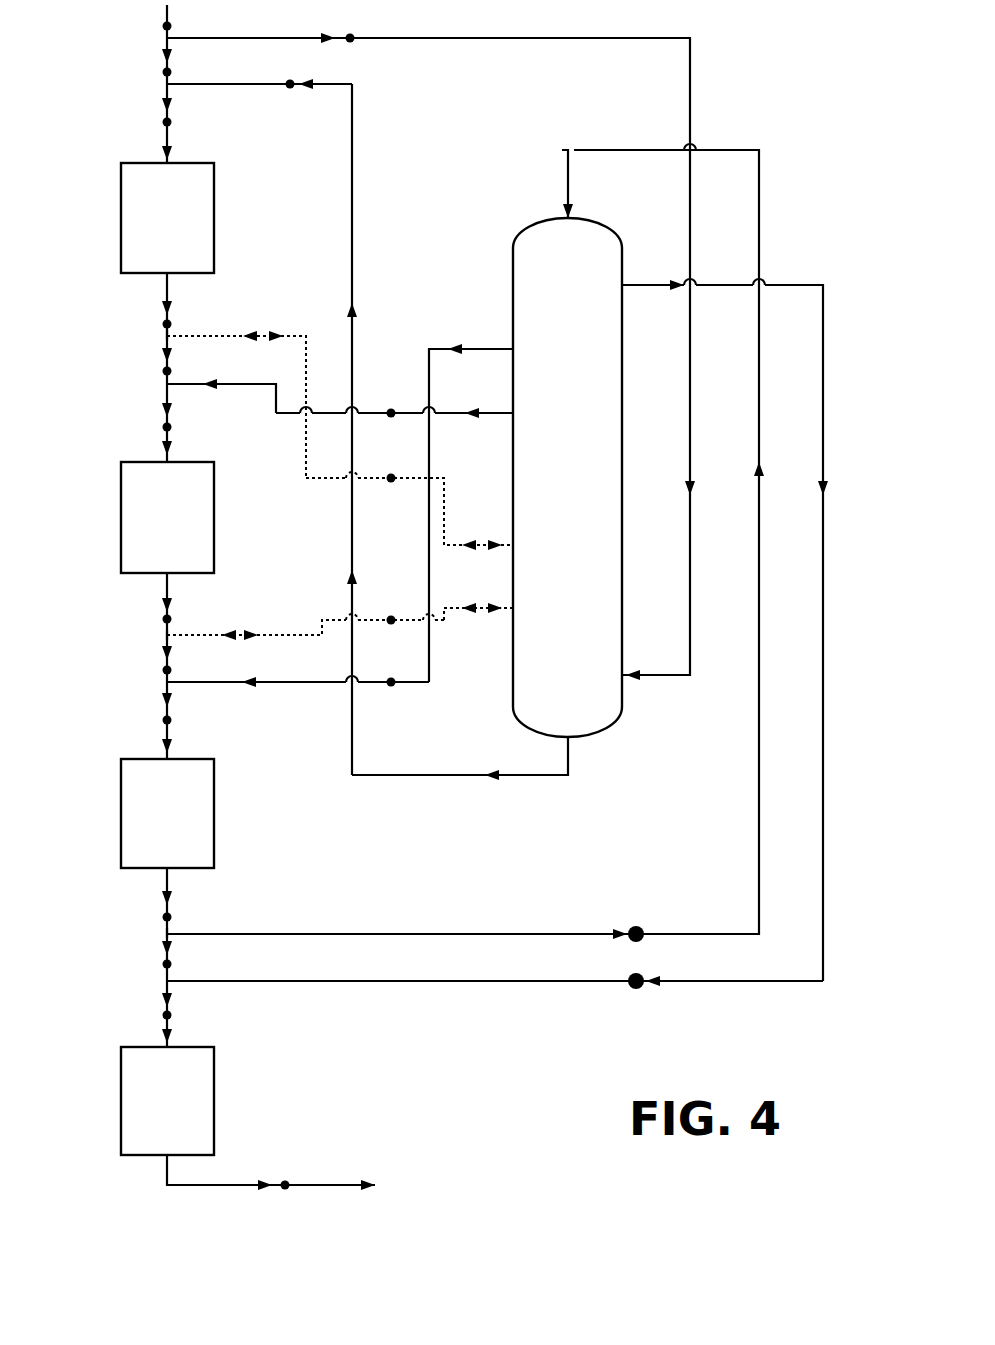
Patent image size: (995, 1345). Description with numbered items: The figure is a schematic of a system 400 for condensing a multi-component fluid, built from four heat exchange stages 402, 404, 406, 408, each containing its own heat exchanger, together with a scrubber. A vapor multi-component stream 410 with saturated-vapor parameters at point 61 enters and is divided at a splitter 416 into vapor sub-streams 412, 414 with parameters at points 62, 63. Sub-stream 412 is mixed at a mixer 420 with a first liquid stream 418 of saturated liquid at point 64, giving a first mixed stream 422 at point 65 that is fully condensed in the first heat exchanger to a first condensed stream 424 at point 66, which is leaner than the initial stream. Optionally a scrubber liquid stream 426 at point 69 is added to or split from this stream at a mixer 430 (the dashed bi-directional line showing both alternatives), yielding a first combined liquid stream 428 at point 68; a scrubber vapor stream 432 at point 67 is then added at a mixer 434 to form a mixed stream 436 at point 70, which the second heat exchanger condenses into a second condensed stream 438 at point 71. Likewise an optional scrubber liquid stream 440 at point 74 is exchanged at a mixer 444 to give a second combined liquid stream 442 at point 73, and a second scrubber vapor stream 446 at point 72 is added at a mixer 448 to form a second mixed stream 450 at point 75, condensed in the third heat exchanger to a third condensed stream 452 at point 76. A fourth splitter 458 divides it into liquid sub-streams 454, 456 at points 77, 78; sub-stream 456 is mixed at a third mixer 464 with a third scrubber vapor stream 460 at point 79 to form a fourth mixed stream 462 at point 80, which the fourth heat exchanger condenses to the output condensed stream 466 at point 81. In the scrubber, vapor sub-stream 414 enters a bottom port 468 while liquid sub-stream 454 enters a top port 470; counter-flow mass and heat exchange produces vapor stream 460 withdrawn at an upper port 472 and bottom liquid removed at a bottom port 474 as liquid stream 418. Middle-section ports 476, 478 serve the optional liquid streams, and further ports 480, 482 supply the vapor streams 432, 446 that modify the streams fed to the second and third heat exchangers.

The system 400 is at (800, 100).
The first heat exchange stage 402 is at (238, 220).
The second heat exchange stage 404 is at (228, 518).
The third heat exchange stage 406 is at (252, 818).
The fourth heat exchange stage 408 is at (238, 1103).
The vapor multi-component stream 410 is at (168, 12).
The vapor sub-stream 412 is at (172, 44).
The vapor sub-stream 414 is at (443, 40).
The splitter 416 is at (163, 40).
The first liquid stream 418 is at (353, 158).
The mixer 420 is at (163, 86).
The first mixed stream 422 is at (172, 93).
The first condensed stream 424 is at (168, 288).
The scrubber liquid stream 426 is at (307, 348).
The first combined liquid stream 428 is at (165, 342).
The mixer 430 is at (165, 338).
The scrubber vapor stream 432 is at (182, 384).
The mixer 434 is at (165, 387).
The mixed stream 436 is at (165, 397).
The second condensed stream 438 is at (162, 587).
The scrubber liquid stream 440 is at (322, 612).
The second combined liquid stream 442 is at (168, 640).
The mixer 444 is at (160, 636).
The second scrubber vapor stream 446 is at (273, 686).
The mixer 448 is at (162, 686).
The second mixed stream 450 is at (168, 694).
The third condensed stream 452 is at (168, 882).
The liquid sub-stream 454 is at (370, 930).
The liquid sub-stream 456 is at (168, 938).
The fourth splitter 458 is at (160, 932).
The third scrubber vapor stream 460 is at (432, 984).
The fourth mixed stream 462 is at (168, 986).
The third mixer 464 is at (160, 982).
The output condensed stream 466 is at (320, 1185).
The bottom port 468 is at (620, 682).
The top port 470 is at (570, 222).
The upper port 472 is at (623, 277).
The bottom port 474 is at (567, 738).
The port 476 is at (513, 542).
The port 478 is at (513, 605).
The port 480 is at (513, 413).
The column side draw stream 482 is at (513, 348).
The point 61 is at (148, 26).
The point 62 is at (148, 72).
The point 63 is at (350, 27).
The point 64 is at (289, 73).
The point 65 is at (148, 122).
The point 66 is at (148, 322).
The point 67 is at (391, 426).
The point 68 is at (148, 370).
The point 69 is at (391, 468).
The point 70 is at (186, 428).
The point 71 is at (149, 619).
The point 72 is at (391, 671).
The point 73 is at (149, 670).
The point 74 is at (391, 630).
The point 75 is at (149, 720).
The point 76 is at (149, 916).
The point 77 is at (636, 917).
The point 78 is at (149, 964).
The point 79 is at (636, 996).
The point 80 is at (149, 1015).
The point 81 is at (288, 1168).